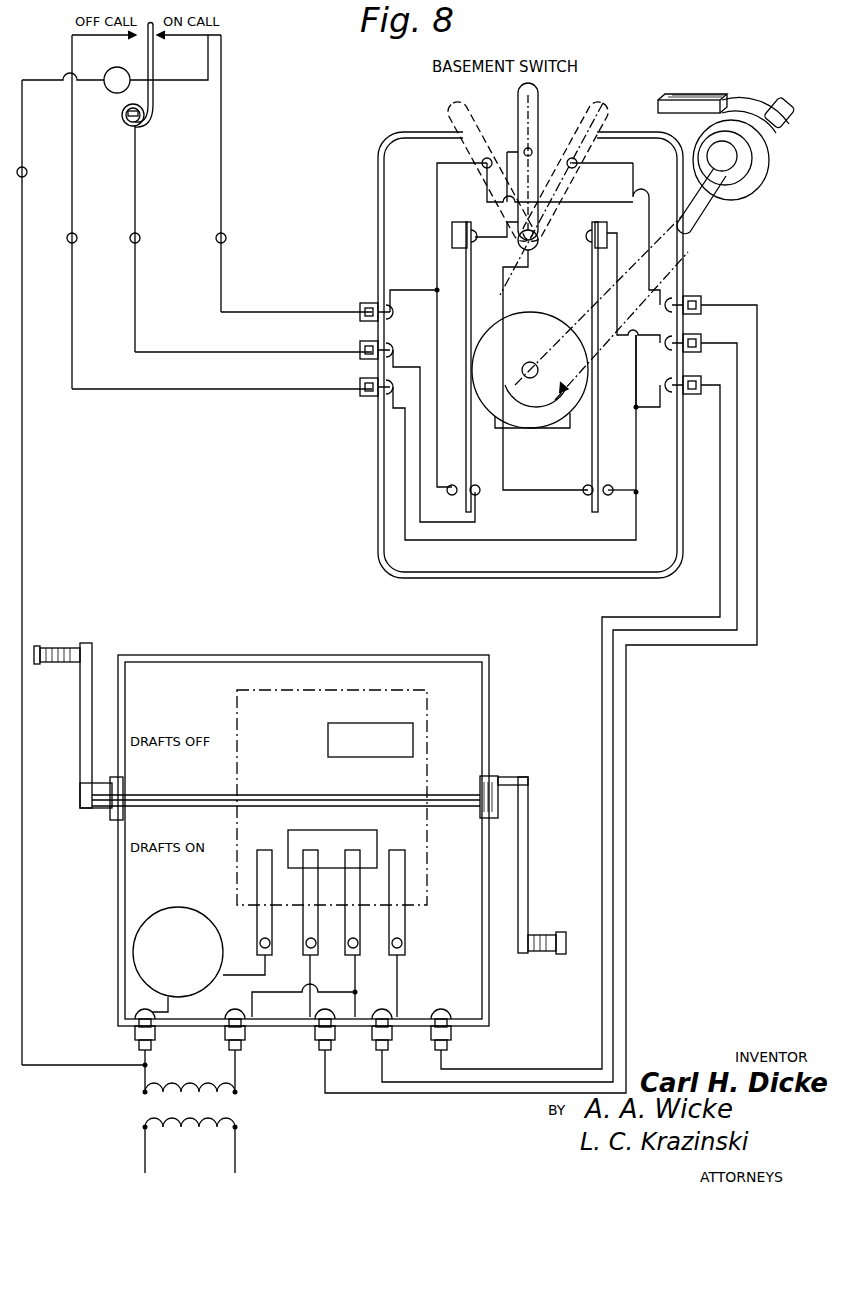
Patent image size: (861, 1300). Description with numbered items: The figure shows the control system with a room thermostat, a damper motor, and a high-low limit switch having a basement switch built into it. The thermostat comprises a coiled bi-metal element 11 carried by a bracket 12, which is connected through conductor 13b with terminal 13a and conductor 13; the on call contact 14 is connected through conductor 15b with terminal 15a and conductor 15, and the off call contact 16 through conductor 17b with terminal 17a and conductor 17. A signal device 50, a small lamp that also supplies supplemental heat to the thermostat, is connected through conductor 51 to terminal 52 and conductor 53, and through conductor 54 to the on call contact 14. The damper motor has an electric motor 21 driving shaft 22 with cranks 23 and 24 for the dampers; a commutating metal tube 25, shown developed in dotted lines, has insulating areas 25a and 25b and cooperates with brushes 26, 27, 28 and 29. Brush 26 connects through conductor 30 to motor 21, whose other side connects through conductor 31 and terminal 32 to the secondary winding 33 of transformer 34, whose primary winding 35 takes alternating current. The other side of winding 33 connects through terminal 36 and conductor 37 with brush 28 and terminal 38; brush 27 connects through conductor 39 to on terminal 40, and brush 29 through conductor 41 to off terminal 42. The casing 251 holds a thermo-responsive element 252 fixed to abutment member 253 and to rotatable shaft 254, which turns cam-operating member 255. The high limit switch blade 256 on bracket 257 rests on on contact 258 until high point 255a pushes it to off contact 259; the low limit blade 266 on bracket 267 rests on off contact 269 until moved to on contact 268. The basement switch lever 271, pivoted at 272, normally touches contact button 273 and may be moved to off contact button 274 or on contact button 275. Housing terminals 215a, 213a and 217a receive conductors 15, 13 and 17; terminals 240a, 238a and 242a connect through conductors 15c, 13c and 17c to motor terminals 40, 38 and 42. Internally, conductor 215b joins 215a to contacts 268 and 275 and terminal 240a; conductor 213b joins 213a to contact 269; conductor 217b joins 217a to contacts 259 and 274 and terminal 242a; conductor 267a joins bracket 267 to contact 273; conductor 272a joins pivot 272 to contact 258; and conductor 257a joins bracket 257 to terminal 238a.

The coiled bi-metal element 11 is at (146, 128).
The bracket 12 is at (124, 118).
The conductor 13 is at (212, 352).
The terminal 13a is at (140, 239).
The conductor 13b is at (137, 184).
The conductor 13c is at (740, 462).
The on call contact 14 is at (160, 40).
The conductor 15 is at (252, 311).
The terminal 15a is at (226, 239).
The conductor 15b is at (226, 168).
The conductor 15c is at (758, 410).
The off call contact 16 is at (128, 38).
The conductor 17 is at (200, 390).
The terminal 17a is at (67, 241).
The conductor 17b is at (70, 208).
The conductor 17c is at (722, 540).
The electric motor 21 is at (178, 952).
The shaft 22 is at (148, 806).
The crank 23 is at (80, 750).
The crank 24 is at (530, 888).
The metal tube 25 is at (236, 768).
The insulating area 25a is at (290, 828).
The insulating area 25b is at (328, 737).
The brush 26 is at (256, 921).
The brush 27 is at (303, 921).
The brush 28 is at (346, 921).
The brush 29 is at (390, 922).
The conductor 30 is at (235, 972).
The conductor 31 is at (172, 1008).
The terminal 32 is at (134, 1040).
The secondary winding 33 is at (198, 1080).
The transformer 34 is at (140, 1108).
The primary winding 35 is at (166, 1135).
The terminal 36 is at (224, 1040).
The conductor 37 is at (295, 978).
The terminal 38 is at (372, 1046).
The conductor 39 is at (308, 1002).
The on terminal 40 is at (316, 1048).
The conductor 41 is at (405, 978).
The off terminal 42 is at (432, 1040).
The signal device 50 is at (117, 80).
The conductor 51 is at (58, 78).
The terminal 52 is at (26, 166).
The conductor 53 is at (26, 470).
The conductor 54 is at (172, 84).
The terminal 213a is at (360, 356).
The conductor 213b is at (420, 450).
The terminal 215a is at (360, 317).
The conductor 215b is at (410, 288).
The terminal 217a is at (360, 393).
The conductor 217b is at (405, 432).
The terminal 238a is at (700, 337).
The on terminal 240a is at (692, 294).
The off terminal 242a is at (694, 378).
The casing 251 is at (400, 545).
The thermo-responsive element 252 is at (740, 200).
The abutment member 253 is at (688, 96).
The rotatable shaft 254 is at (775, 100).
The cam-operating member 255 is at (540, 318).
The high point 255a is at (525, 432).
The switch blade 256 is at (602, 262).
The bracket 257 is at (603, 220).
The conductor 257a is at (620, 335).
The on contact 258 is at (585, 487).
The off contact 259 is at (610, 485).
The flexible contact blade 266 is at (470, 305).
The bracket 267 is at (456, 220).
The conductor 267a is at (482, 245).
The on contact 268 is at (447, 488).
The off contact 269 is at (478, 486).
The switch lever 271 is at (538, 88).
The pivot 272 is at (540, 240).
The conductor 272a is at (540, 346).
The contact button 273 is at (539, 110).
The off contact button 274 is at (533, 150).
The on contact button 275 is at (488, 158).